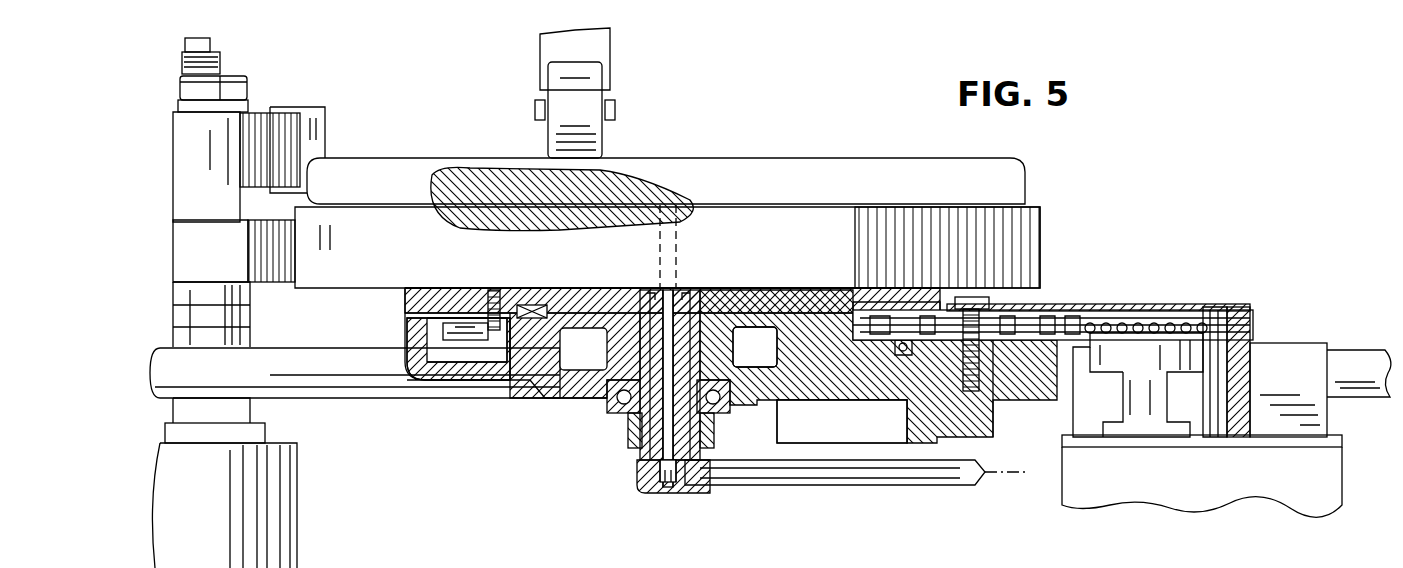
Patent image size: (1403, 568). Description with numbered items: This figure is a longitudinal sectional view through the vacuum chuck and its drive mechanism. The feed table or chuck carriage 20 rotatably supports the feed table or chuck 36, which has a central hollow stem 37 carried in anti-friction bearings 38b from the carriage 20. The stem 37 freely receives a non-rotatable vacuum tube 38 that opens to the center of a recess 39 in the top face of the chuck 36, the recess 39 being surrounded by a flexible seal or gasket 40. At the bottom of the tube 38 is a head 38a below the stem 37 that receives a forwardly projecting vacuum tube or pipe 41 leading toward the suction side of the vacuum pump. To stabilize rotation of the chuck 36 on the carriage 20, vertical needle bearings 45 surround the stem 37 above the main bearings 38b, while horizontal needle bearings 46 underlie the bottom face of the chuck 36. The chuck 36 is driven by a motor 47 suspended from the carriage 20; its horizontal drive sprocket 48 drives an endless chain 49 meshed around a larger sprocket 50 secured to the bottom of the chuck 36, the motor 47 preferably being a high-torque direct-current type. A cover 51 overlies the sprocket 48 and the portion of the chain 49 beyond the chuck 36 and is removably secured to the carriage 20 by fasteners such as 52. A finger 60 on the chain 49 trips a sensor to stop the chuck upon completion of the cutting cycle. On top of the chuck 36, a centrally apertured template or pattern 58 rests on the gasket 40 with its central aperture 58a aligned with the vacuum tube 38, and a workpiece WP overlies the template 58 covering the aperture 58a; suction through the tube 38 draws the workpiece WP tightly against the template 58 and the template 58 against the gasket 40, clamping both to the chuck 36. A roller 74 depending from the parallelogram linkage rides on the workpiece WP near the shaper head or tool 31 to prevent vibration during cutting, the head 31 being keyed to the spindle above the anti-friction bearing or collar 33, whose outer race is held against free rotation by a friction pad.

The feed table or chuck carriage 20 is at (535, 402).
The shaper head or tool 31 is at (262, 110).
The anti-friction bearing or collar 33 is at (180, 245).
The feed table or chuck 36 is at (745, 285).
The central hollow stem 37 is at (638, 432).
The vacuum tube 38 is at (676, 290).
The head 38a is at (646, 492).
The anti-friction bearings 38b is at (620, 412).
The recess 39 is at (583, 288).
The flexible seal or gasket 40 is at (415, 287).
The vacuum tube or pipe 41 is at (875, 485).
The vertical needle bearings 45 is at (755, 347).
The horizontal needle bearings 46 is at (810, 302).
The motor 47 is at (1328, 488).
The drive sprocket 48 is at (1140, 323).
The endless chain 49 is at (1005, 350).
The larger sprocket 50 is at (472, 342).
The cover 51 is at (1213, 305).
The fasteners 52 is at (965, 296).
The template or pattern 58 is at (325, 283).
The central hole or aperture 58a is at (688, 197).
The finger 60 is at (898, 358).
The roller 74 is at (600, 148).
The workpiece WP is at (798, 157).